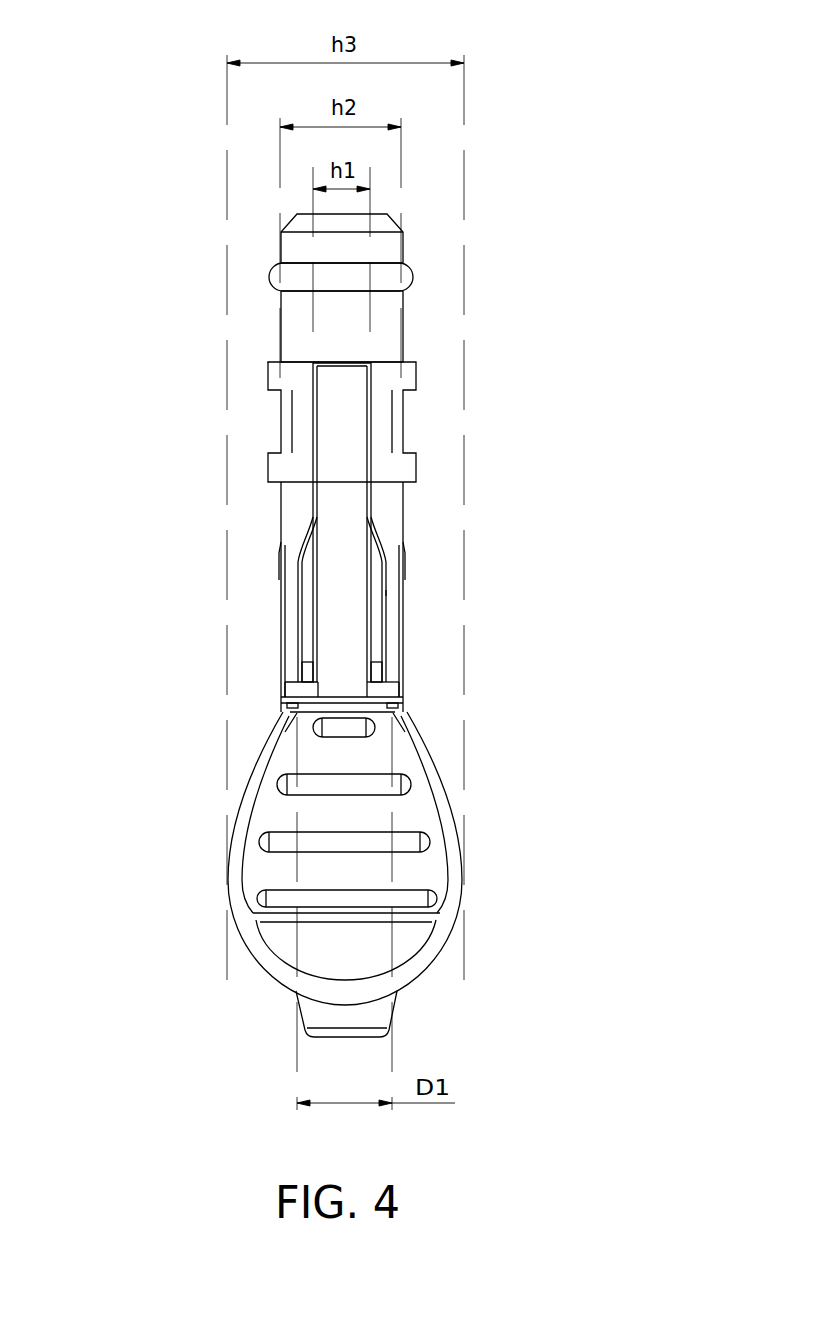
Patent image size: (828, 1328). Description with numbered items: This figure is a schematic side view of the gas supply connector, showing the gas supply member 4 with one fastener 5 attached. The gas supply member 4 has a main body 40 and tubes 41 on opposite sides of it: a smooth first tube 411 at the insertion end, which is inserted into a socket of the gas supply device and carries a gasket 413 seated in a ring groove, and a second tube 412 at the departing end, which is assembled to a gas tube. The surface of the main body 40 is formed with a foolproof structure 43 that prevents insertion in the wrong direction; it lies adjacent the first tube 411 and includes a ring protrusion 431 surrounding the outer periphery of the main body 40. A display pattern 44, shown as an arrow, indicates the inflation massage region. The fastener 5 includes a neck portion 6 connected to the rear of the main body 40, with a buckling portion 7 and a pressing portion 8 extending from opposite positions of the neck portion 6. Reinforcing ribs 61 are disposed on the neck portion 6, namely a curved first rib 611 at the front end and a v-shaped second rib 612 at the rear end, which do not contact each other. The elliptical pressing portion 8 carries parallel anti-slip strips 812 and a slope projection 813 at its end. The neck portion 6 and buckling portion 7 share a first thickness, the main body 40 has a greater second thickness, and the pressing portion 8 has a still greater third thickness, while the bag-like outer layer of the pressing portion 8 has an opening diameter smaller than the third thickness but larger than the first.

The gas supply member 4 is at (233, 432).
The main body 40 is at (297, 505).
The tubes 41 is at (383, 613).
The first tube 411 is at (297, 248).
The second tube 412 is at (393, 1010).
The gasket 413 is at (390, 278).
The foolproof structure 43 is at (392, 423).
The ring protrusion 431 is at (402, 373).
The display pattern 44 is at (292, 567).
The fastener 5 is at (421, 593).
The neck portion 6 is at (350, 650).
The reinforcing ribs 61 is at (245, 614).
The first rib 611 is at (307, 610).
The second rib 612 is at (295, 688).
The buckling portion 7 is at (342, 443).
The pressing portion 8 is at (257, 763).
The anti-slip strips 812 is at (280, 845).
The slope projection 813 is at (287, 943).